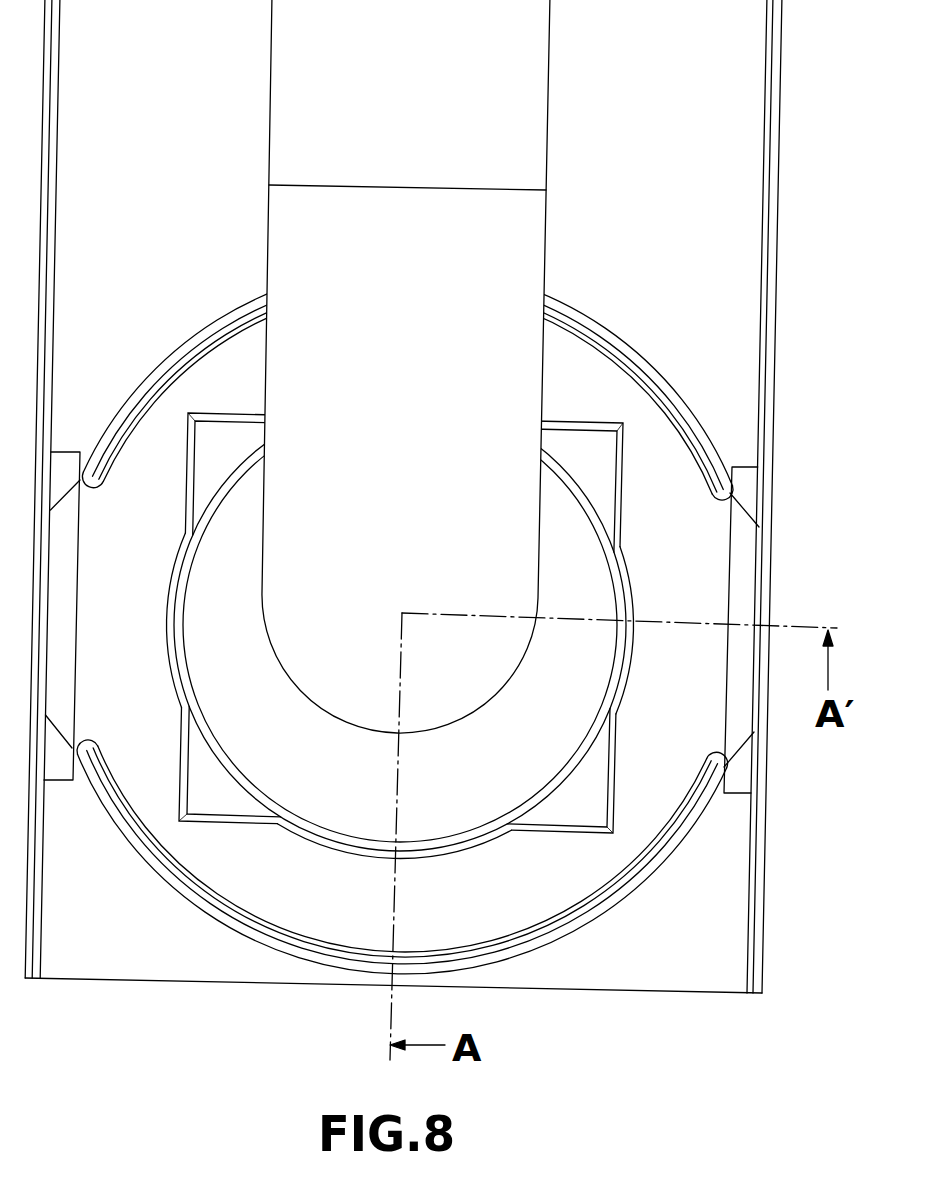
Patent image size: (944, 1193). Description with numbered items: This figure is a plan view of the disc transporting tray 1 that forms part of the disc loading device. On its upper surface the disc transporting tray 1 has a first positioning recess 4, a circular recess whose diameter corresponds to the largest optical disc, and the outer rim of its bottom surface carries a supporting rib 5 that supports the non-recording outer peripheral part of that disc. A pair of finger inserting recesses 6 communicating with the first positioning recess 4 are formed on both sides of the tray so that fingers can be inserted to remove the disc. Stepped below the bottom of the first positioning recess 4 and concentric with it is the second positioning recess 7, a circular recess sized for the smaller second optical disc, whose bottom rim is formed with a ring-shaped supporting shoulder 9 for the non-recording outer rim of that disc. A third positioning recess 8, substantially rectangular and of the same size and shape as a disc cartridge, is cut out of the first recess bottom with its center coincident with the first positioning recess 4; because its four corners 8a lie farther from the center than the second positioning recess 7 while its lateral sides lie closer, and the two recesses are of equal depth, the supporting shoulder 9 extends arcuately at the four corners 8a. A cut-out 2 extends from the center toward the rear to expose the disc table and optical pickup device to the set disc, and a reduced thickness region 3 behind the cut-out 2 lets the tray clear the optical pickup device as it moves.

The disc transporting tray 1 is at (779, 274).
The cut-out 2 is at (545, 223).
The reduced thickness region 3 is at (522, 103).
The first positioning recess 4 is at (655, 370).
The supporting rib 5 is at (612, 342).
The finger inserting recesses 6 is at (745, 532).
The second positioning recess 7 is at (635, 577).
The third positioning recess 8 is at (622, 503).
The four corners of the third positioning recess 8a is at (210, 443).
The supporting shoulder 9 is at (562, 465).